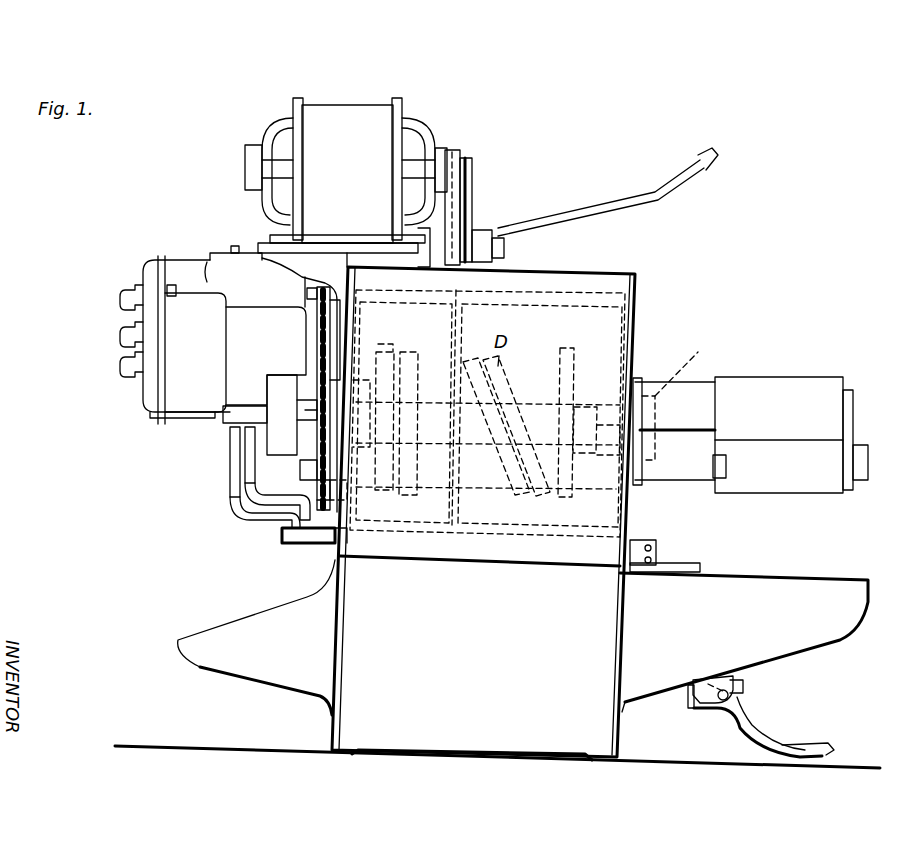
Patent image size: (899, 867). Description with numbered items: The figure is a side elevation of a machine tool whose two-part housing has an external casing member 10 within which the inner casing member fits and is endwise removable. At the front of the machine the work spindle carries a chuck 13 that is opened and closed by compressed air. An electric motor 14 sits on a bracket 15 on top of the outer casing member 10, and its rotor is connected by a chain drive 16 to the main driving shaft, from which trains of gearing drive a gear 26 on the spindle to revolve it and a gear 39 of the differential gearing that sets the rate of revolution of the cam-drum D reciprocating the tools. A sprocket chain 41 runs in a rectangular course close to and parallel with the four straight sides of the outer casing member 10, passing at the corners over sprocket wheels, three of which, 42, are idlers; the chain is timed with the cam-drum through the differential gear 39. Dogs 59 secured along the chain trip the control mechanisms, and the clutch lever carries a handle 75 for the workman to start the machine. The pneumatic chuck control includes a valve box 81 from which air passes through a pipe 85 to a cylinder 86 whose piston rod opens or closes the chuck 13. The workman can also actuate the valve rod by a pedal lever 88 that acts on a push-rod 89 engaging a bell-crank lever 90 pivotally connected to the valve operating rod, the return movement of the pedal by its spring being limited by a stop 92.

The external casing member 10 is at (580, 273).
The chuck 13 is at (750, 410).
The electric motor 14 is at (346, 170).
The bracket 15 is at (318, 262).
The chain drive 16 is at (462, 162).
The gear 26 is at (387, 352).
The differential gear 39 is at (419, 408).
The sprocket chain 41 is at (318, 339).
The idler sprocket wheel 42 is at (323, 490).
The dog 59 is at (307, 294).
The handle 75 is at (610, 192).
The valve box 81 is at (311, 545).
The pipe 85 is at (232, 476).
The cylinder 86 is at (278, 449).
The pedal lever 88 is at (757, 738).
The push-rod 89 is at (687, 694).
The bell-crank lever 90 is at (672, 564).
The stop 92 is at (738, 676).